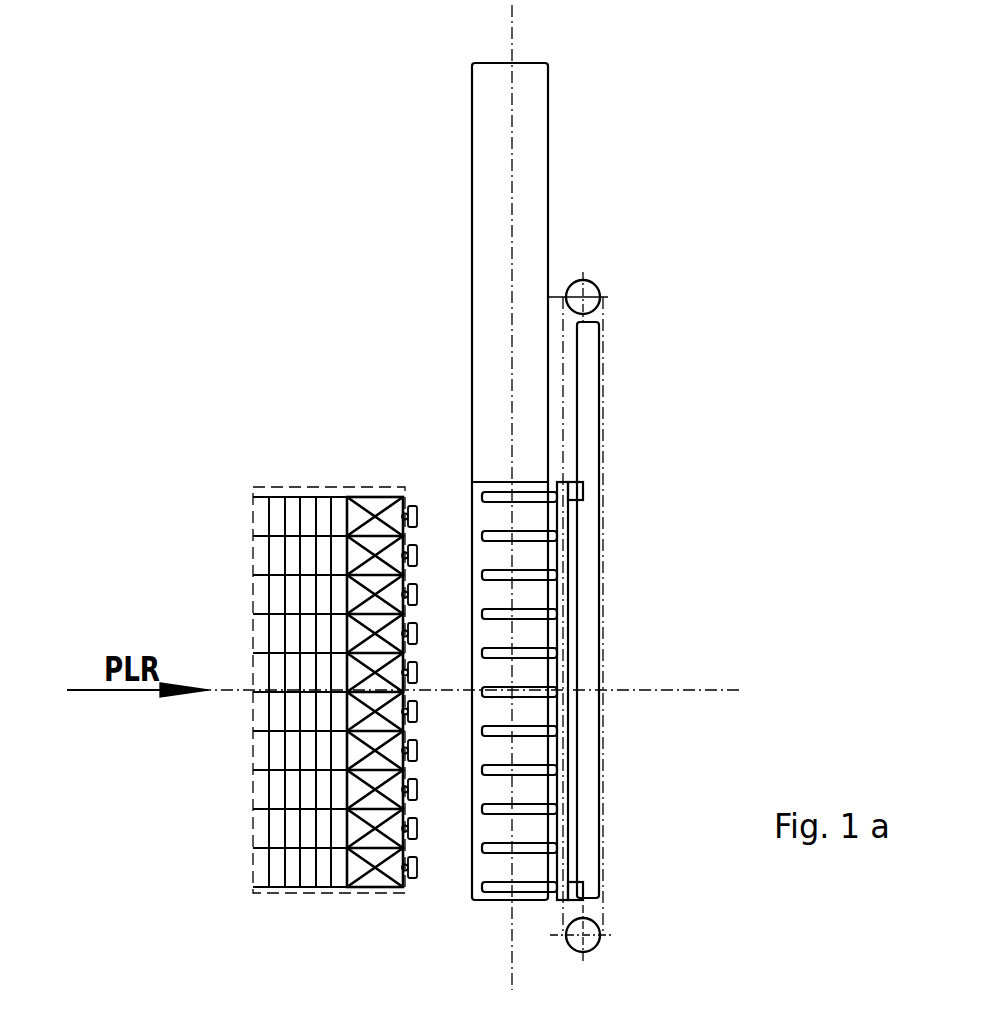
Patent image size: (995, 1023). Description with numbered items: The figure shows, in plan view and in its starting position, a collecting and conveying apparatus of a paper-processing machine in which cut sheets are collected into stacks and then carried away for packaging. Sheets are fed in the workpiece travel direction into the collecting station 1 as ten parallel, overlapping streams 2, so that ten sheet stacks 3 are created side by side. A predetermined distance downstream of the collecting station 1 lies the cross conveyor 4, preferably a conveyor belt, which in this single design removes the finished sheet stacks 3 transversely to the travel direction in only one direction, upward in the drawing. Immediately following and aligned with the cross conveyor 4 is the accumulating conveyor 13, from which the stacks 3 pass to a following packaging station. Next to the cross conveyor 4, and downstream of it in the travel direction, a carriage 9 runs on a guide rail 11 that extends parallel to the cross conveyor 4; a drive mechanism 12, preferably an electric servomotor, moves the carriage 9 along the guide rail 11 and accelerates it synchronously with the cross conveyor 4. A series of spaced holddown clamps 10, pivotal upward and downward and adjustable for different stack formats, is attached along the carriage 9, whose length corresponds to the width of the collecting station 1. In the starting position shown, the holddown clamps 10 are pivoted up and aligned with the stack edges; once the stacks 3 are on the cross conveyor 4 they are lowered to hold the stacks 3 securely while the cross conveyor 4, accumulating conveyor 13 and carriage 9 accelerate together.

The collecting station 1 is at (252, 432).
The overlapping streams 2 is at (278, 515).
The sheet stacks 3 is at (395, 505).
The cross conveyor 4 is at (525, 633).
The carriage 9 is at (560, 560).
The holddown clamps 10 is at (520, 850).
The guide rail 11 is at (585, 392).
The drive mechanism 12 is at (600, 930).
The accumulating conveyor 13 is at (531, 150).